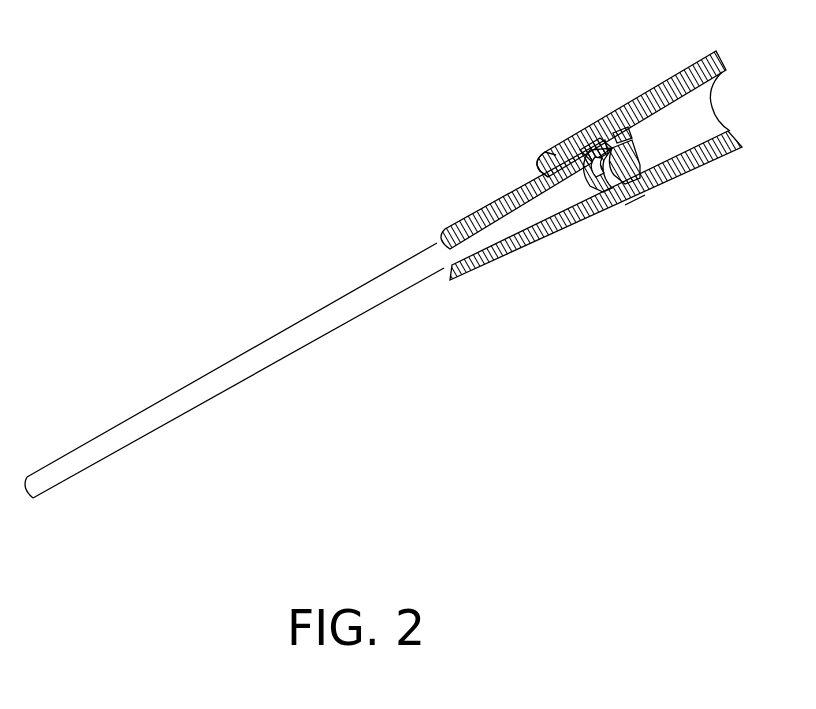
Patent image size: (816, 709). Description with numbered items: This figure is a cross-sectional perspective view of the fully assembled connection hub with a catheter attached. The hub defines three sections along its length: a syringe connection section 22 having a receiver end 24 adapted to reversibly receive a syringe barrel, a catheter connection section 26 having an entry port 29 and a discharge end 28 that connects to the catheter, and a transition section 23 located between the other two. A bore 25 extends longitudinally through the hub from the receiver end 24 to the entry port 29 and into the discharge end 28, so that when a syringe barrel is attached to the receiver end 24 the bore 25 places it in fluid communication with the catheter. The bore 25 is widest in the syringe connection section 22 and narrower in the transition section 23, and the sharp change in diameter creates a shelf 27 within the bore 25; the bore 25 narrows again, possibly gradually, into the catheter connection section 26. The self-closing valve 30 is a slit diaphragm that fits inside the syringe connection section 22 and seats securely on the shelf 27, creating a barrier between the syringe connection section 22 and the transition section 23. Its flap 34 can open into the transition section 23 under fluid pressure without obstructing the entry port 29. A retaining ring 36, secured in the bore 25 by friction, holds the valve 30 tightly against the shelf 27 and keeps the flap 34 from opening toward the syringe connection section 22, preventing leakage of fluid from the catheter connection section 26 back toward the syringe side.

The syringe connection section 22 is at (711, 178).
The transition section 23 is at (635, 210).
The receiver end 24 is at (700, 62).
The bore 25 is at (657, 157).
The catheter connection section 26 is at (529, 252).
The shelf 27 is at (623, 168).
The discharge end 28 is at (433, 242).
The entry port 29 is at (587, 186).
The self-closing valve 30 is at (560, 148).
The flap 34 is at (593, 147).
The retaining ring 36 is at (612, 128).